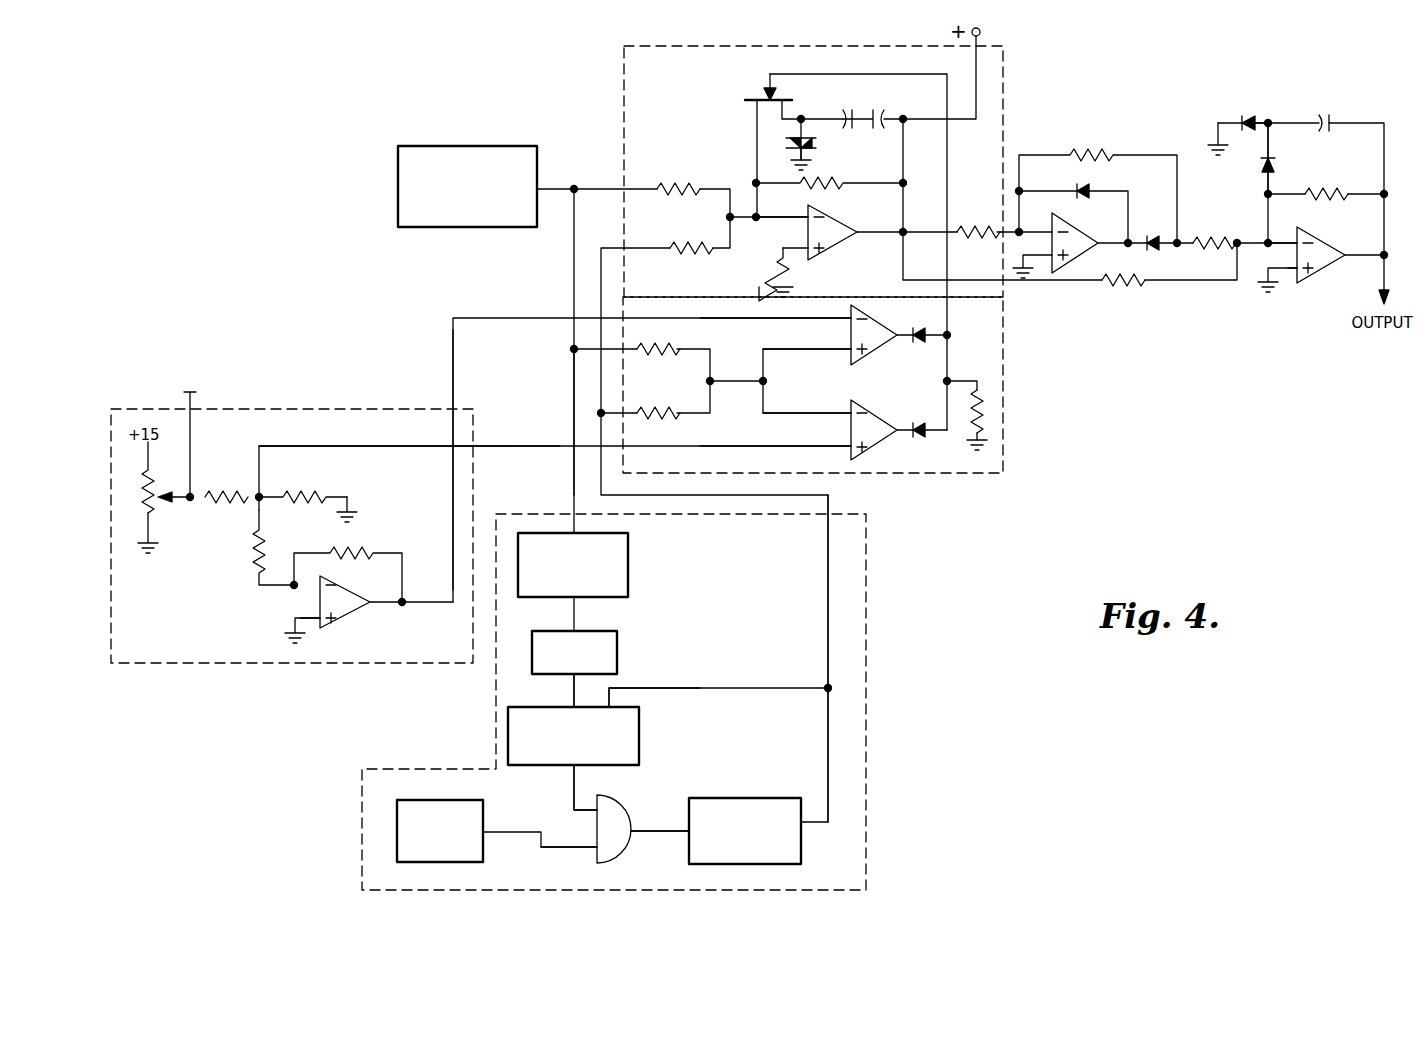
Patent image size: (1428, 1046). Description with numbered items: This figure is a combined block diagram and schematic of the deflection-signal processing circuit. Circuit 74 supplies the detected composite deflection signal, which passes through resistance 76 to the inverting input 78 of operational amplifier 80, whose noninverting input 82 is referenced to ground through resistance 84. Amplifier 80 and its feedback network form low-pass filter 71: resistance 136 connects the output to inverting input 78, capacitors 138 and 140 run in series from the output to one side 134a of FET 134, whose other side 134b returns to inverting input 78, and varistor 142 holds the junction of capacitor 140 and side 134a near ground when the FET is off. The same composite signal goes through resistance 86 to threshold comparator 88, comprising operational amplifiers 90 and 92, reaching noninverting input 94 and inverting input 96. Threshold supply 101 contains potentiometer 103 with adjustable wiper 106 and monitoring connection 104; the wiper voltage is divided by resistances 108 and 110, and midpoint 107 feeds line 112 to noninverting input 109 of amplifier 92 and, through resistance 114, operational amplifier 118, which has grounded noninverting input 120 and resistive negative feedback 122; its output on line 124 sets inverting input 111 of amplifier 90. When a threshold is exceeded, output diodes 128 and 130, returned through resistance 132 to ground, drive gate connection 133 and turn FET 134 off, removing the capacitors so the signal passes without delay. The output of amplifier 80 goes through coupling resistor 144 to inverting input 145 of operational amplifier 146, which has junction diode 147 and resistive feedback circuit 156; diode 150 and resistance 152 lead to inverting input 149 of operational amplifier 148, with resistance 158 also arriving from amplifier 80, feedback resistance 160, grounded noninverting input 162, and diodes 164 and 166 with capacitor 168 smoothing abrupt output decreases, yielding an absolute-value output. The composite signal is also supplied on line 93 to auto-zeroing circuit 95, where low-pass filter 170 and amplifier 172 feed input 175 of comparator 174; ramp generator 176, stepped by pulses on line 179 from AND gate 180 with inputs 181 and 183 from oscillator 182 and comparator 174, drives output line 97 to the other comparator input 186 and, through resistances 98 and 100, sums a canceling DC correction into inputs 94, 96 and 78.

The low-pass filter 71 is at (624, 58).
The circuit 74 is at (466, 146).
The resistance 76 is at (685, 172).
The inverting input 78 is at (804, 214).
The operational amplifier 80 is at (832, 258).
The noninverting input 82 is at (799, 244).
The resistance 84 is at (772, 270).
The resistance 86 is at (648, 356).
The threshold comparator 88 is at (935, 478).
The operational amplifier 90 is at (862, 360).
The operational amplifier 92 is at (870, 404).
The line 93 is at (574, 407).
The noninverting input 94 is at (830, 356).
The auto-zeroing circuit 95 is at (866, 720).
The inverting input 96 is at (828, 410).
The line 97 is at (828, 498).
The resistance 98 is at (650, 420).
The resistance 100 is at (694, 241).
The threshold supply 101 is at (252, 409).
The potentiometer 103 is at (156, 500).
The monitoring connection 104 is at (190, 442).
The adjustable wiper 106 is at (174, 492).
The midpoint 107 is at (262, 500).
The resistance 108 is at (224, 490).
The noninverting input 109 is at (829, 447).
The resistance 110 is at (300, 490).
The inverting input 111 is at (820, 325).
The line 112 is at (304, 446).
The resistance 114 is at (252, 554).
The operational amplifier 118 is at (352, 612).
The noninverting input 120 is at (310, 620).
The resistive negative feedback 122 is at (365, 534).
The line 124 is at (453, 370).
The output diode 128 is at (915, 344).
The output diode 130 is at (918, 440).
The resistance 132 is at (985, 408).
The gate connection 133 is at (767, 74).
The FET 134 is at (745, 100).
The one side of FET 134a is at (794, 100).
The other side of FET 134b is at (748, 104).
The resistance 136 is at (826, 180).
The capacitor 138 is at (881, 108).
The capacitor 140 is at (840, 128).
The varistor 142 is at (786, 144).
The coupling resistor 144 is at (978, 222).
The inverting input 145 is at (1036, 228).
The operational amplifier 146 is at (1088, 218).
The junction diode 147 is at (1085, 180).
The operational amplifier 148 is at (1325, 234).
The inverting input 149 is at (1286, 240).
The diode 150 is at (1150, 250).
The resistance 152 is at (1214, 232).
The resistive feedback circuit 156 is at (1090, 155).
The resistance 158 is at (1126, 286).
The feedback resistance 160 is at (1320, 188).
The noninverting input 162 is at (1290, 270).
The diode 164 is at (1276, 162).
The diode 166 is at (1255, 98).
The capacitor 168 is at (1326, 108).
The low-pass filter 170 is at (628, 561).
The amplifier 172 is at (617, 650).
The comparator 174 is at (639, 740).
The input 175 is at (574, 702).
The ramp generator 176 is at (727, 798).
The line 179 is at (662, 828).
The AND gate 180 is at (626, 856).
The input 181 is at (562, 852).
The oscillator 182 is at (427, 862).
The input 183 is at (582, 806).
The input 186 is at (615, 698).